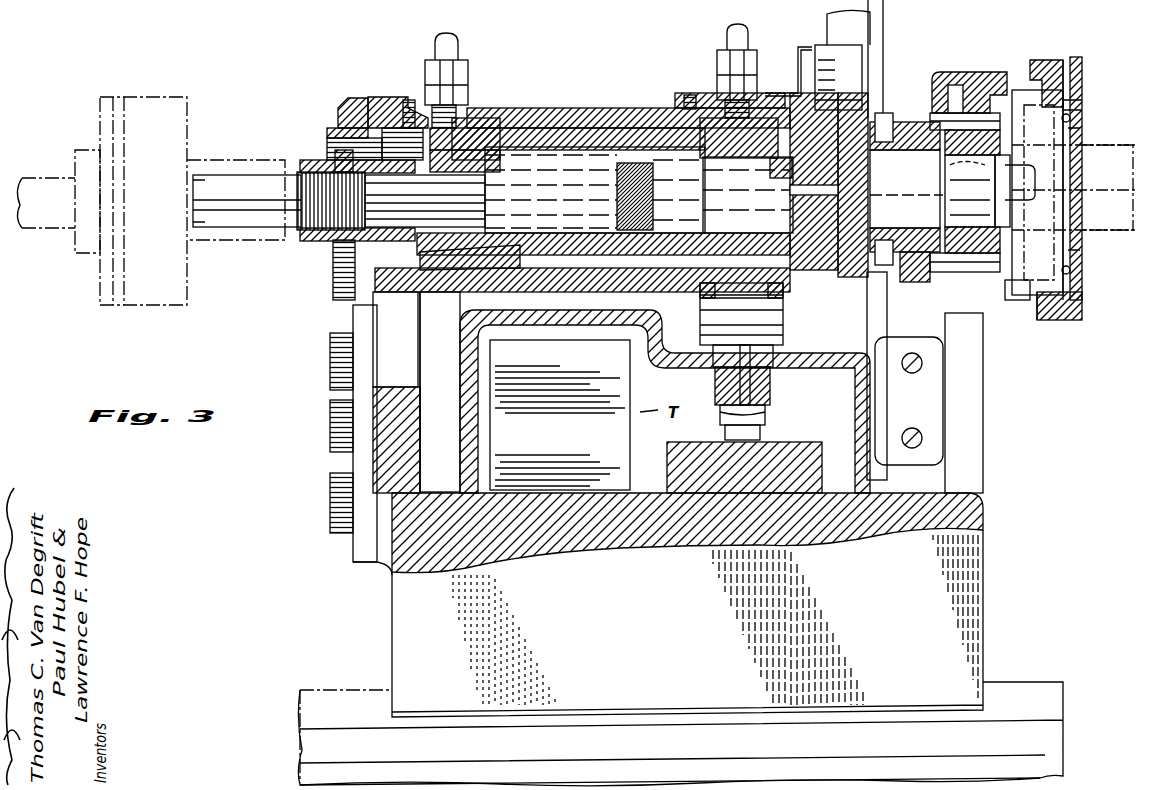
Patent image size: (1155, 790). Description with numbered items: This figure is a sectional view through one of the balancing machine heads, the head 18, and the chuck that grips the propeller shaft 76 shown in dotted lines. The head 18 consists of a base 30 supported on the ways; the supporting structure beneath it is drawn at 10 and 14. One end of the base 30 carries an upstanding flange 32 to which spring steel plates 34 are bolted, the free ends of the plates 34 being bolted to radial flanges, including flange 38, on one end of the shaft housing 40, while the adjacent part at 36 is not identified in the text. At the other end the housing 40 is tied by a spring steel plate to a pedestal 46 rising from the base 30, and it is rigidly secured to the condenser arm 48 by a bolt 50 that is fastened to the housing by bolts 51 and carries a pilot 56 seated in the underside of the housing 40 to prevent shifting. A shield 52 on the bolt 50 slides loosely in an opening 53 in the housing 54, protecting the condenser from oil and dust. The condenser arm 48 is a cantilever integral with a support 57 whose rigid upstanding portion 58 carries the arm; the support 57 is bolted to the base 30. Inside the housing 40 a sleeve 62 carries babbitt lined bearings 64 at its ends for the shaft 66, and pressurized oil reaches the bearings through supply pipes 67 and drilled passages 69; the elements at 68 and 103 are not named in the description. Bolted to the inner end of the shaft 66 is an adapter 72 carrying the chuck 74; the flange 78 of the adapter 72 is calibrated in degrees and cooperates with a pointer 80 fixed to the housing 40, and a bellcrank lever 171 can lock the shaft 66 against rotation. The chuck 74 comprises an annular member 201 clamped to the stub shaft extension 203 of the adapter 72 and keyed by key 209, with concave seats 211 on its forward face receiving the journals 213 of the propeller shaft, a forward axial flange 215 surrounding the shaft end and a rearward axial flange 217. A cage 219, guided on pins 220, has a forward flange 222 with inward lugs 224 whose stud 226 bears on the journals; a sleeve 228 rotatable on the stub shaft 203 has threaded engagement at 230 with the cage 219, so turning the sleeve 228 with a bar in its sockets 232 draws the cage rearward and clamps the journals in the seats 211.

The bed 10 is at (1045, 770).
The slide 14 is at (315, 692).
The head 18 is at (352, 566).
The base 30 is at (978, 602).
The upstanding flange 32 is at (355, 462).
The spring steel plates 34 is at (365, 400).
The plate 36 is at (400, 355).
The flange 38 is at (404, 312).
The shaft housing 40 is at (598, 108).
The pedestal 46 is at (975, 388).
The condenser arm 48 is at (770, 385).
The bolt 50 is at (740, 390).
The bolts 51 is at (700, 298).
The shield 52 is at (715, 338).
The opening 53 is at (740, 360).
The housing 54 is at (462, 400).
The pilot 56 is at (720, 250).
The support 57 is at (810, 468).
The upstanding portion 58 is at (765, 420).
The sleeves 62 is at (540, 128).
The babbitt lined bearings 64 is at (418, 127).
The shaft 66 is at (262, 228).
The supply pipes 67 is at (458, 50).
The flange 68 is at (162, 102).
The drilled passages 69 is at (416, 118).
The adapter 72 is at (870, 125).
The chuck 74 is at (1045, 62).
The propeller shaft 76 is at (1075, 182).
The flange 78 is at (865, 75).
The pointer 80 is at (799, 47).
The spindle gear 103 is at (618, 186).
The bellcrank lever 171 is at (885, 14).
The annular member 201 is at (1010, 300).
The stub shaft extension 203 is at (1030, 172).
The key 209 is at (975, 160).
The concave seats 211 is at (985, 113).
The journals 213 is at (1078, 100).
The forwardly extending axial flange 215 is at (1050, 320).
The rearwardly extending axial flange 217 is at (962, 238).
The cage 219 is at (950, 75).
The pins 220 is at (935, 125).
The forward flange 222 is at (1082, 75).
The lugs 224 is at (1072, 118).
The stud 226 is at (1082, 128).
The sleeve 228 is at (895, 160).
The threaded engagement 230 is at (945, 212).
The sockets 232 is at (888, 270).